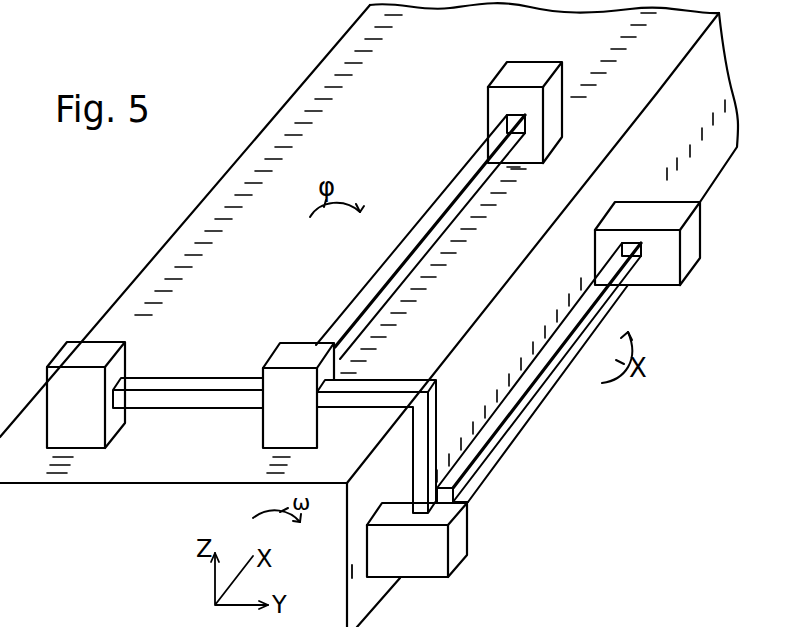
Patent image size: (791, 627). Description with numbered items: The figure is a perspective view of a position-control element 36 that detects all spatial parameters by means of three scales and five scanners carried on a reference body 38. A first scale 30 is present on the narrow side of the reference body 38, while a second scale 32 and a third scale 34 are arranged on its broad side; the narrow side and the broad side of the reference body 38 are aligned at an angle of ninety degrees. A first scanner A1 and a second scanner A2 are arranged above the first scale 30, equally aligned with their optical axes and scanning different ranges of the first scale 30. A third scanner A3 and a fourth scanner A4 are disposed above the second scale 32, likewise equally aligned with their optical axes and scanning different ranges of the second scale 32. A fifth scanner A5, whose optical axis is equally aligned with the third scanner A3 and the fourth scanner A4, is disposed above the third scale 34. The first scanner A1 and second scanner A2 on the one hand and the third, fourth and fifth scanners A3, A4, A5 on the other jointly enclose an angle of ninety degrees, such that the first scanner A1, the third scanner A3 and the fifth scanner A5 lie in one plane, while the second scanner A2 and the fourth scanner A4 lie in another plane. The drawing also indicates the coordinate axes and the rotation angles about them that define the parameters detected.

The first scale 30 is at (520, 366).
The second scale 32 is at (482, 207).
The third scale 34 is at (316, 117).
The position-control element 36 is at (158, 472).
The reference body 38 is at (432, 454).
The first scanner A1 is at (458, 552).
The second scanner A2 is at (693, 247).
The third scanner A3 is at (297, 348).
The fourth scanner A4 is at (510, 73).
The fifth scanner A5 is at (78, 348).